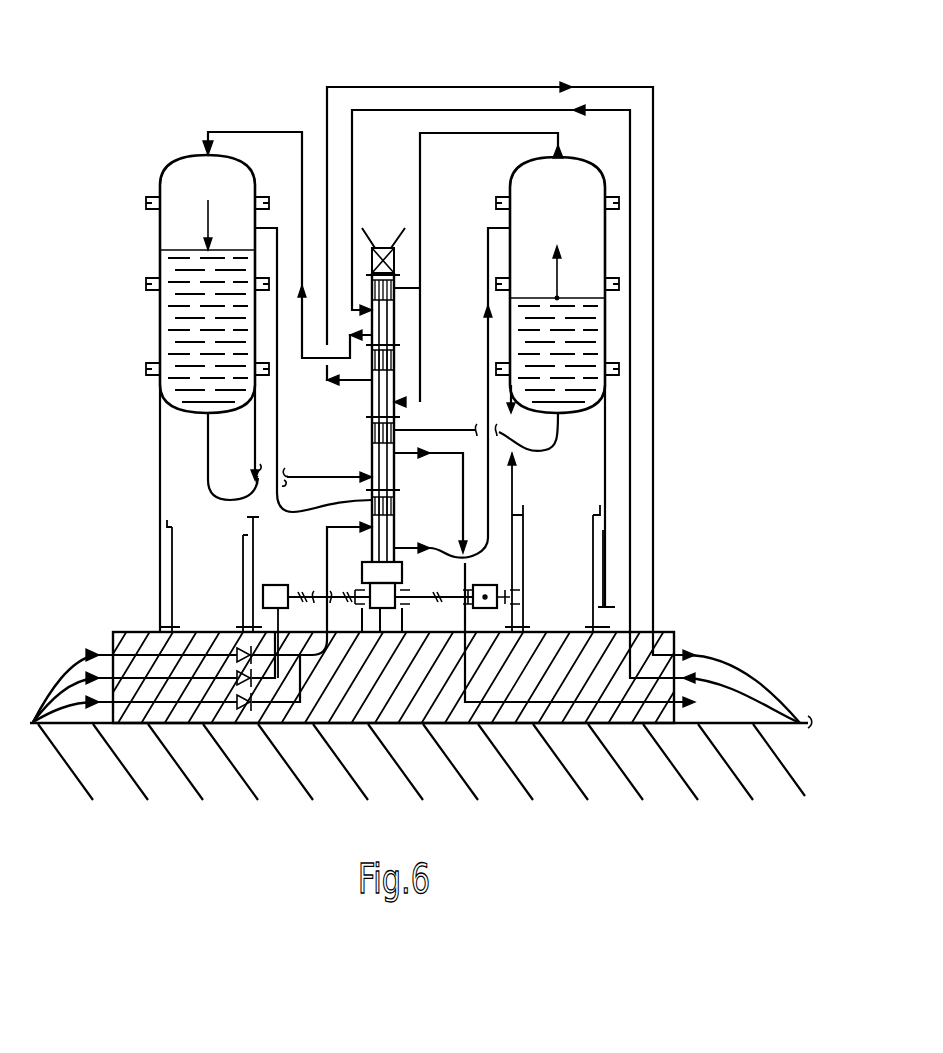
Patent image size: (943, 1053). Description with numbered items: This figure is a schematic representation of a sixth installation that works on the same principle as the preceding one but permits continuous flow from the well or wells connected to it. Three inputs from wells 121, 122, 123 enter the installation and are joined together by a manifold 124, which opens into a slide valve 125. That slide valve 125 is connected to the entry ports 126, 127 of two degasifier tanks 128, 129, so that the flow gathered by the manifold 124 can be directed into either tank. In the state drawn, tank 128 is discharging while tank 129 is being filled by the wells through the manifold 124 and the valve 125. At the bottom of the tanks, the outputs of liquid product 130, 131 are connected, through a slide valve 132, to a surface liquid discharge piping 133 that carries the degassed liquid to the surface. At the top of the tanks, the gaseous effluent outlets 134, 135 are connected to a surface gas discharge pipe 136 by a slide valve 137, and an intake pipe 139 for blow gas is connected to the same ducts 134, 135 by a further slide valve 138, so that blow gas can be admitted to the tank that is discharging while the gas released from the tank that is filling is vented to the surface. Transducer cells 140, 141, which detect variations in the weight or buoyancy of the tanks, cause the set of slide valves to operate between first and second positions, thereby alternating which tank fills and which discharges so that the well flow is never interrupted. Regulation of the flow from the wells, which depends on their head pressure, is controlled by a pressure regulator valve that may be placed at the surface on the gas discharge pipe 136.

The input from well 121 is at (66, 693).
The input from well 122 is at (108, 653).
The input from well 123 is at (112, 643).
The manifold 124 is at (155, 697).
The slide valve 125 is at (365, 556).
The entry port 126 is at (286, 513).
The entry port 127 is at (492, 495).
The degasifier tank 128 is at (160, 325).
The degasifier tank 129 is at (607, 337).
The output of liquid product 130 is at (207, 465).
The output of liquid product 131 is at (545, 440).
The slide valve 132 is at (373, 455).
The surface liquid discharge piping 133 is at (573, 700).
The gaseous effluent outlet 134 is at (228, 132).
The gaseous effluent outlet 135 is at (518, 133).
The surface gas discharge pipe 136 is at (717, 660).
The slide valve 137 is at (373, 395).
The slide valve 138 is at (390, 318).
The intake pipe for blow gas 139 is at (730, 688).
The transducer cell 140 is at (278, 585).
The transducer cell 141 is at (485, 597).